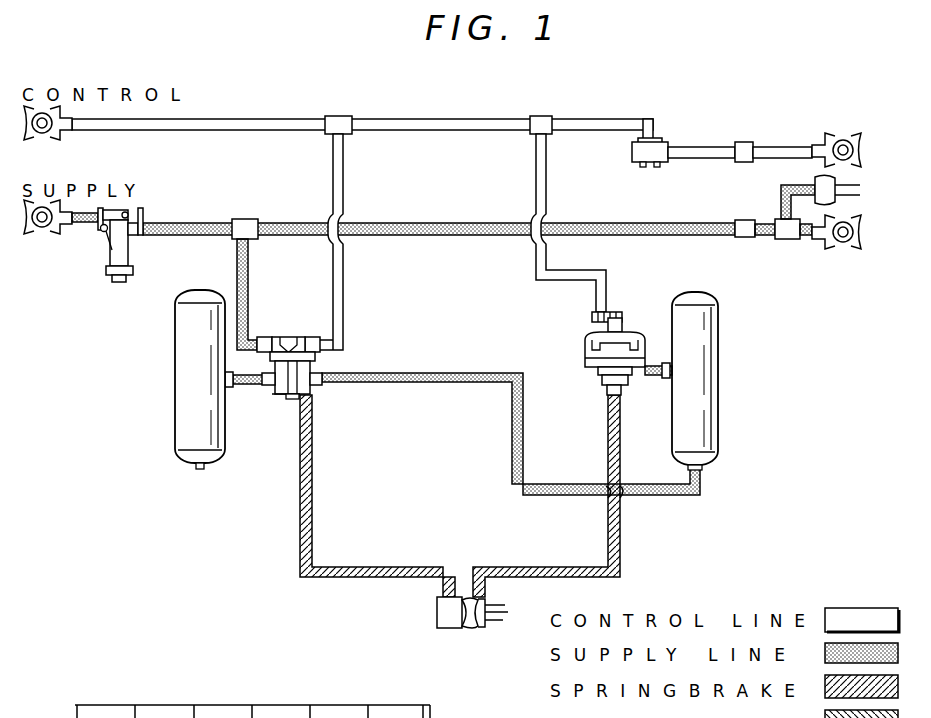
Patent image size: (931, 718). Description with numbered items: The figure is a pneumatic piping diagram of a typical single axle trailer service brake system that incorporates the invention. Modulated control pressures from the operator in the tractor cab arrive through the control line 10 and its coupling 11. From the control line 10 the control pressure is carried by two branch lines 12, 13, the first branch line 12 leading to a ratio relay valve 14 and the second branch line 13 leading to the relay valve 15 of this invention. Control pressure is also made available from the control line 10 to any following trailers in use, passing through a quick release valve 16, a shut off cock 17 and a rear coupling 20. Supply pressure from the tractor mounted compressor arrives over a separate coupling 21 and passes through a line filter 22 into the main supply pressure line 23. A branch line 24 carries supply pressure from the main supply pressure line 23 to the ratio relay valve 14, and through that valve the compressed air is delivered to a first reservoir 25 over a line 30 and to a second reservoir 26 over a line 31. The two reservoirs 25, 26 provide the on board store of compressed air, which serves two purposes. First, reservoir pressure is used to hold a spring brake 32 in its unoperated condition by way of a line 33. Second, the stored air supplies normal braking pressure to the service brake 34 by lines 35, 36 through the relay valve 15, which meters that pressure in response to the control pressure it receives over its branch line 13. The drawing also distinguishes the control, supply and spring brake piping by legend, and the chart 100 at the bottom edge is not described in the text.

The control line 10 is at (233, 104).
The coupling 11 is at (42, 126).
The branch line 12 is at (345, 165).
The branch line 13 is at (546, 172).
The ratio relay valve 14 is at (290, 350).
The relay valve 15 is at (590, 350).
The quick release valve 16 is at (670, 140).
The shut off cock 17 is at (748, 142).
The coupling 20 is at (845, 140).
The coupling 21 is at (42, 220).
The line filter 22 is at (115, 252).
The main supply pressure line 23 is at (172, 222).
The branch line 24 is at (237, 266).
The reservoir 25 is at (182, 385).
The reservoir 26 is at (705, 375).
The line 30 is at (250, 392).
The line 31 is at (424, 372).
The spring brake 32 is at (437, 614).
The line 33 is at (375, 567).
The service brake 34 is at (478, 630).
The line 35 is at (620, 540).
The line 36 is at (655, 378).
The chart 100 is at (252, 709).